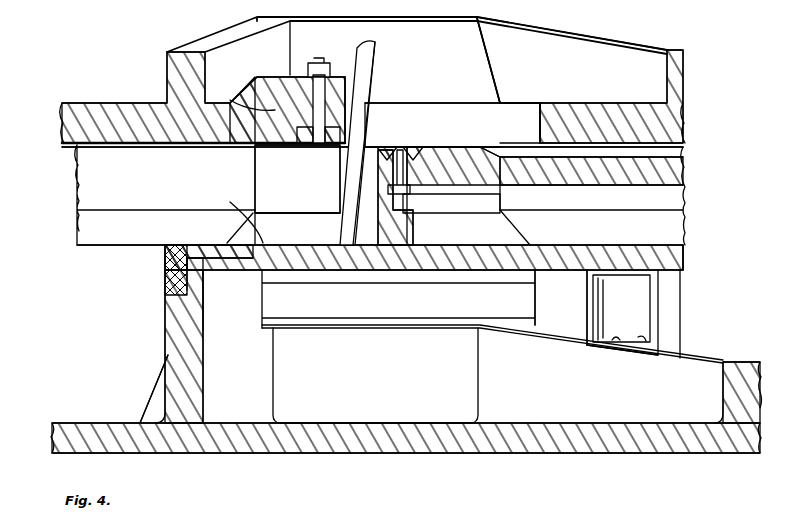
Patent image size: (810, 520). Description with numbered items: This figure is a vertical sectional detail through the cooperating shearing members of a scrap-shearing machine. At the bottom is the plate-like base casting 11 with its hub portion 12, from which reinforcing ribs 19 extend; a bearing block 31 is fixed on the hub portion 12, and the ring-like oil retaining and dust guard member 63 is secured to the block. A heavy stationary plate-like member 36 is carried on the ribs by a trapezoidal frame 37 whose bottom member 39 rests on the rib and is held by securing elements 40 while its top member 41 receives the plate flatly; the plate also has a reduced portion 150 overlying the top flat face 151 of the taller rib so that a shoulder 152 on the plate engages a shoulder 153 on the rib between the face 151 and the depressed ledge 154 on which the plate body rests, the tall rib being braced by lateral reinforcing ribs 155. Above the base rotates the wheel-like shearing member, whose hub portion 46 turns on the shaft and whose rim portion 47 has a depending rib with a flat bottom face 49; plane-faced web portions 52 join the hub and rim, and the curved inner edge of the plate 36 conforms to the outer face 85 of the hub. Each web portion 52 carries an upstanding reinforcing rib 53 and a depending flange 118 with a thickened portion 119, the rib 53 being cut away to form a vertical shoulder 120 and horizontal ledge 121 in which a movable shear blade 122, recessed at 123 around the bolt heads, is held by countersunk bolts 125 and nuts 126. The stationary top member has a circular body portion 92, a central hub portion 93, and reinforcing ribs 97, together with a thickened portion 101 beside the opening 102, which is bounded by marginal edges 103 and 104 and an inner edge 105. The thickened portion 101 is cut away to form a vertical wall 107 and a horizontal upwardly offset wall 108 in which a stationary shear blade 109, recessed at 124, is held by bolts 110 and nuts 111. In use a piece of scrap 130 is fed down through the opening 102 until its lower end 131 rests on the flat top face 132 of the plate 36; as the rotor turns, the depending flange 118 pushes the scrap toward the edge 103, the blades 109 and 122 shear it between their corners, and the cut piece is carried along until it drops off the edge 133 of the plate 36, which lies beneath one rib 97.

The base casting 11 is at (398, 455).
The hub portion 12 is at (340, 395).
The reinforcing rib 19 is at (175, 376).
The bearing block 31 is at (410, 330).
The plate-like member 36 is at (595, 258).
The frame 37 is at (665, 313).
The bottom member 39 is at (618, 350).
The securing elements 40 is at (638, 335).
The top member 41 is at (683, 240).
The hub portion 46 is at (493, 192).
The rim portion 47 is at (100, 208).
The bottom face 49 is at (97, 250).
The web portion 52 is at (660, 178).
The reinforcing rib 53 is at (452, 146).
The oil retaining and dust guard member 63 is at (268, 302).
The outer face 85 is at (537, 275).
The body portion 92 is at (120, 108).
The hub portion 93 is at (398, 36).
The reinforcing rib 97 is at (227, 33).
The thickened portion 101 is at (68, 146).
The opening 102 is at (510, 83).
The marginal edge 103 is at (343, 66).
The marginal edge 104 is at (538, 100).
The inner edge 105 is at (435, 109).
The vertical wall 107 is at (252, 147).
The horizontal upwardly offset wall 108 is at (350, 118).
The shear blade 109 is at (328, 168).
The bolt 110 is at (260, 88).
The nut 111 is at (312, 62).
The depending flange 118 is at (367, 255).
The thickened portion 119 is at (415, 230).
The vertical shoulder 120 is at (408, 146).
The horizontal ledge 121 is at (385, 172).
The shear blade 122 is at (373, 145).
The recess 123 is at (402, 107).
The recess 124 is at (310, 147).
The countersunk bolt 125 is at (408, 186).
The nut 126 is at (410, 200).
The piece of scrap 130 is at (364, 70).
The lower end 131 is at (340, 246).
The flat top face 132 is at (246, 215).
The edge 133 is at (170, 255).
The reduced portion 150 is at (175, 245).
The top flat face 151 is at (180, 273).
The shoulder 152 is at (195, 258).
The shoulder 153 is at (170, 290).
The depressed ledge 154 is at (205, 292).
The lateral reinforcing rib 155 is at (157, 401).